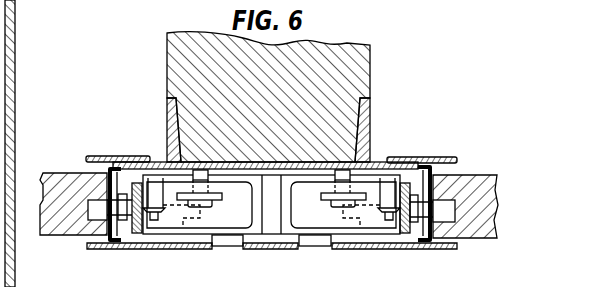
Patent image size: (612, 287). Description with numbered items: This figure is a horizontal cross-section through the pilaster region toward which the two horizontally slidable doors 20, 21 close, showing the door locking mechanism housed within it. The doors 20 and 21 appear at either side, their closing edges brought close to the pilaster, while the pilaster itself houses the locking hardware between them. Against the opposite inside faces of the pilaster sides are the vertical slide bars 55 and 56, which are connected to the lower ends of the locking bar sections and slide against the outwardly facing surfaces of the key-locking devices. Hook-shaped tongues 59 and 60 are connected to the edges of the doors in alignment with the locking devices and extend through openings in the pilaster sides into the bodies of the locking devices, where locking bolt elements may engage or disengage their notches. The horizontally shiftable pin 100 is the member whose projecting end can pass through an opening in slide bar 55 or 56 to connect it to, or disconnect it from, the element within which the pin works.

The horizontally shiftable pin 100 is at (5, 247).
The horizontally slidable door 21 is at (48, 173).
The horizontally slidable door 20 is at (475, 175).
The vertical slide bar 56 is at (135, 235).
The vertical slide bar 55 is at (406, 241).
The hook-shaped tongue 60 is at (183, 227).
The hook-shaped tongue 59 is at (370, 236).